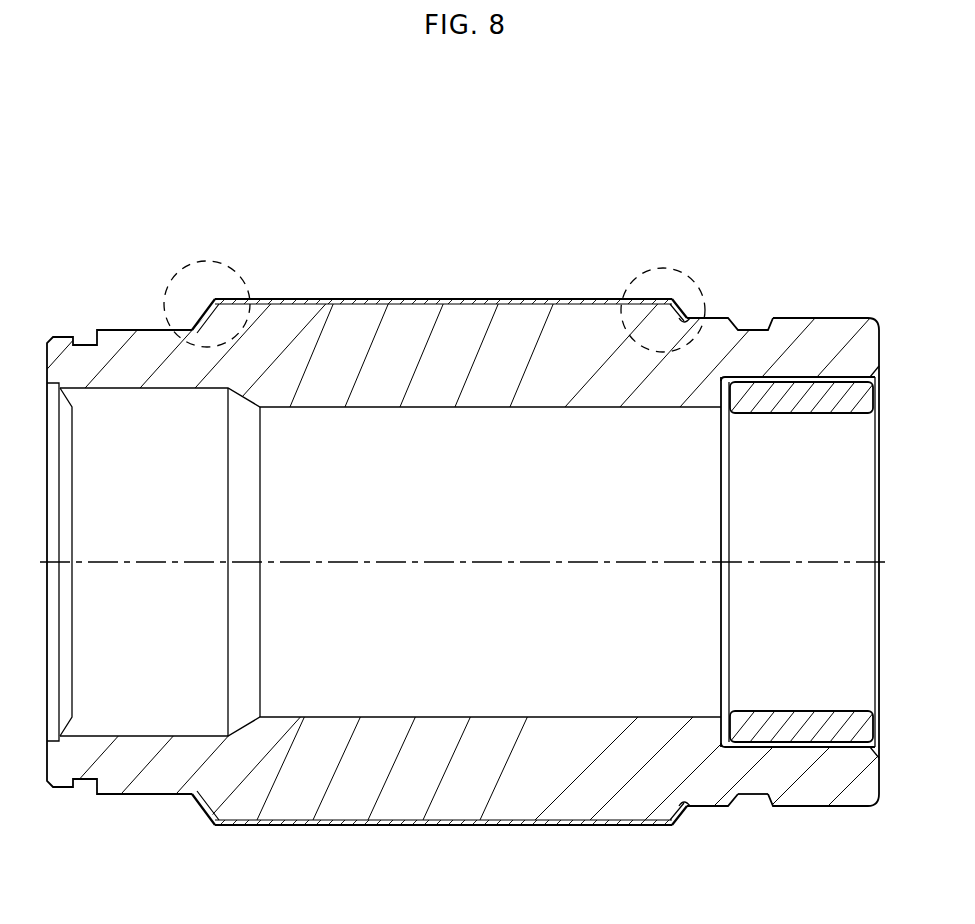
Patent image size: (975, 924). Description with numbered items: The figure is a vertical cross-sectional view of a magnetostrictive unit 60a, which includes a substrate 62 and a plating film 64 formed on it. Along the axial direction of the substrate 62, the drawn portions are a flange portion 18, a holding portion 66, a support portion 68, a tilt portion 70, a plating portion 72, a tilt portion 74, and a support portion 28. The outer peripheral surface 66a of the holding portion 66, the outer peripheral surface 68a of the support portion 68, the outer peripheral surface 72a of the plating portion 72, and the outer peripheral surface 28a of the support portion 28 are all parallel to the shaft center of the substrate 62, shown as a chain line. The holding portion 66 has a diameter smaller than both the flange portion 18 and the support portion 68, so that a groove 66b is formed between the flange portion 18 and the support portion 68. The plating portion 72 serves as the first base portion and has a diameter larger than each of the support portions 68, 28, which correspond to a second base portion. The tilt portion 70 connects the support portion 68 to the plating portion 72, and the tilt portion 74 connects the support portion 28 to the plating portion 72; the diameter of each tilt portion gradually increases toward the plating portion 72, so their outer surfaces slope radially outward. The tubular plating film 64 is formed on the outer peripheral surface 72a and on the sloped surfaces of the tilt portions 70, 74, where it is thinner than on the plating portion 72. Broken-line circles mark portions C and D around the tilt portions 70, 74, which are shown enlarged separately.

The magnetostrictive unit 60a is at (290, 236).
The support portion 28 is at (128, 336).
The outer peripheral surface 28a is at (112, 797).
The tilt portion 74 is at (190, 327).
The plating film 64 is at (438, 303).
The plating portion 72 is at (532, 300).
The outer peripheral surface 72a is at (513, 826).
The portion D is at (210, 262).
The portion C is at (670, 268).
The tilt portion 70 is at (687, 320).
The support portion 68 is at (720, 327).
The outer peripheral surface 68a is at (718, 808).
The holding portion 66 is at (756, 340).
The outer peripheral surface 66a is at (760, 795).
The groove 66b is at (772, 803).
The substrate 62 is at (858, 310).
The flange portion 18 is at (820, 336).